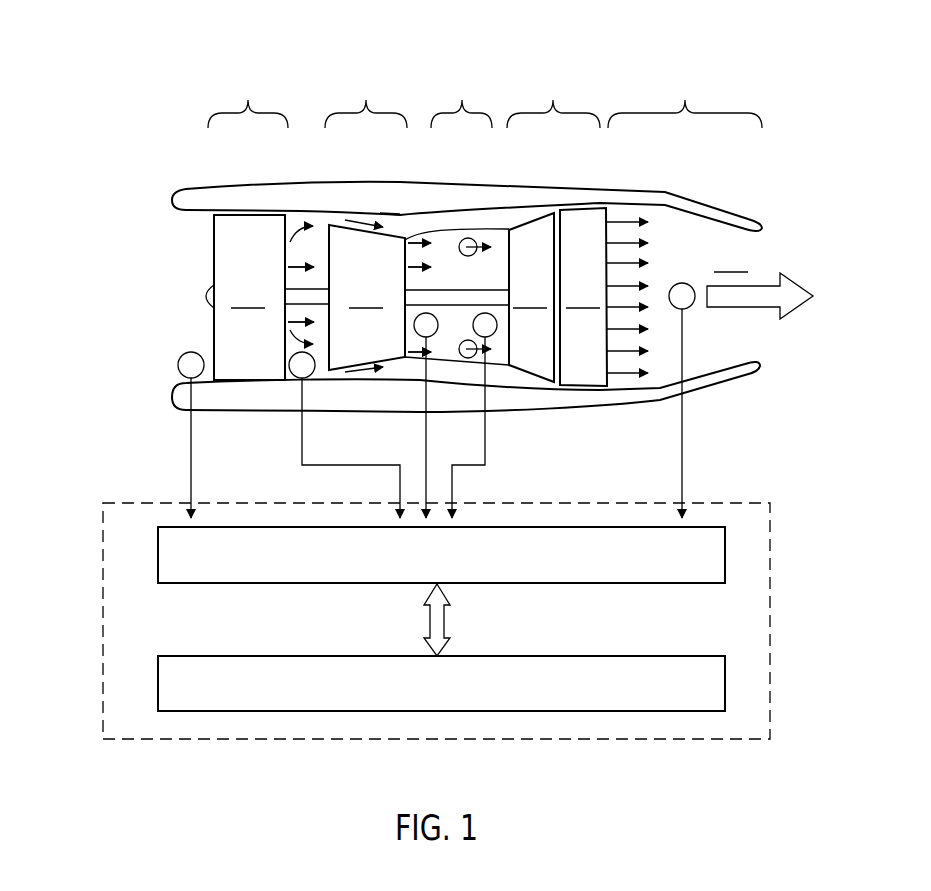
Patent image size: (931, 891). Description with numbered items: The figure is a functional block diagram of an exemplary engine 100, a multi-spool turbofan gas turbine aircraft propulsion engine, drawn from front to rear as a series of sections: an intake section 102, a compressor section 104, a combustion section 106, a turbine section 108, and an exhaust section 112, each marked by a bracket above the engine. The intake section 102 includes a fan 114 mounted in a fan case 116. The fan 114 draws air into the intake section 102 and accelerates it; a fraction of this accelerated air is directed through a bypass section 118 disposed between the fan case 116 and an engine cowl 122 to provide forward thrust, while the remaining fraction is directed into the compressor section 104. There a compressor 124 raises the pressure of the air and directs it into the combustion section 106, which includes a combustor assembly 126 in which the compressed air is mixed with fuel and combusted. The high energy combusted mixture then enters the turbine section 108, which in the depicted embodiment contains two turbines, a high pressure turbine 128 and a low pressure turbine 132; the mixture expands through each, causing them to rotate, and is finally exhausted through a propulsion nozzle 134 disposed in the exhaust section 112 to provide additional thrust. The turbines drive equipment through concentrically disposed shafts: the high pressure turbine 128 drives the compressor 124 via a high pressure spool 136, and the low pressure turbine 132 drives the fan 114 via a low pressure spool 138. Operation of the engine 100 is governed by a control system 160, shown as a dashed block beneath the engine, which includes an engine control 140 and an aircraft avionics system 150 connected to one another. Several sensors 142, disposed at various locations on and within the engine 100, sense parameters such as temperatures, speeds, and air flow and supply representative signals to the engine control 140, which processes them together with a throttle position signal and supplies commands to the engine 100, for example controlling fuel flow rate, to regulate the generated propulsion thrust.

The engine 100 is at (463, 270).
The intake section 102 is at (248, 102).
The compressor section 104 is at (366, 102).
The combustion section 106 is at (461, 102).
The turbine section 108 is at (553, 102).
The exhaust section 112 is at (685, 102).
The fan 114 is at (245, 297).
The fan case 116 is at (323, 192).
The bypass section 118 is at (397, 218).
The engine cowl 122 is at (440, 214).
The compressor 124 is at (367, 297).
The combustor assembly 126 is at (470, 238).
The high pressure turbine 128 is at (531, 297).
The low pressure turbine 132 is at (583, 297).
The propulsion nozzle 134 is at (760, 284).
The high pressure spool 136 is at (455, 300).
The low pressure spool 138 is at (296, 290).
The engine control 140 is at (492, 547).
The sensors 142 is at (178, 362).
The aircraft avionics system 150 is at (492, 674).
The control system 160 is at (441, 580).